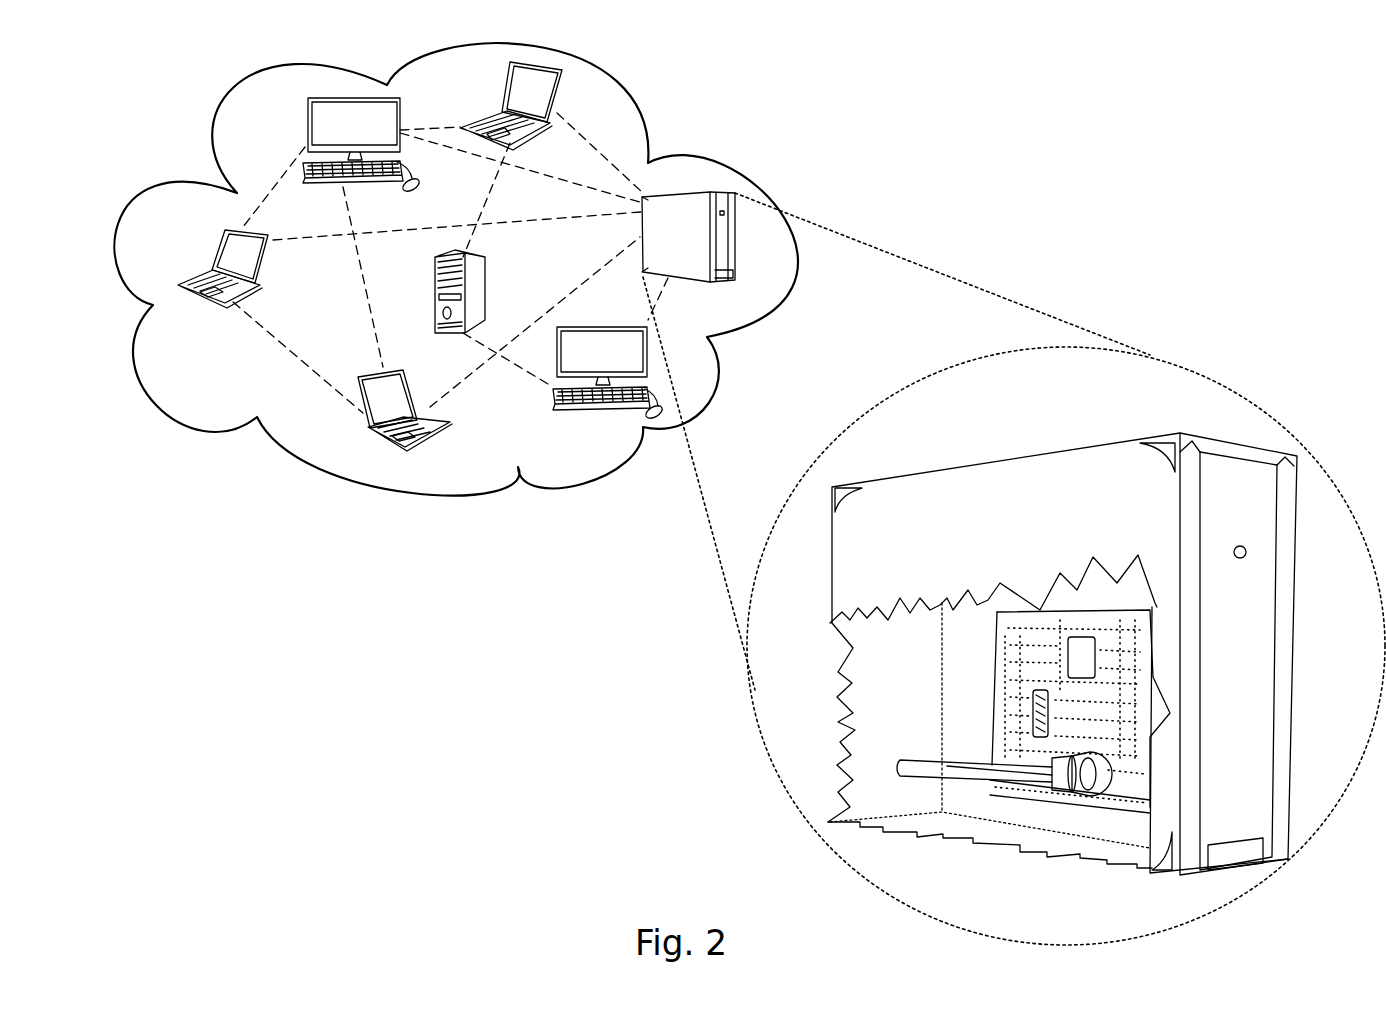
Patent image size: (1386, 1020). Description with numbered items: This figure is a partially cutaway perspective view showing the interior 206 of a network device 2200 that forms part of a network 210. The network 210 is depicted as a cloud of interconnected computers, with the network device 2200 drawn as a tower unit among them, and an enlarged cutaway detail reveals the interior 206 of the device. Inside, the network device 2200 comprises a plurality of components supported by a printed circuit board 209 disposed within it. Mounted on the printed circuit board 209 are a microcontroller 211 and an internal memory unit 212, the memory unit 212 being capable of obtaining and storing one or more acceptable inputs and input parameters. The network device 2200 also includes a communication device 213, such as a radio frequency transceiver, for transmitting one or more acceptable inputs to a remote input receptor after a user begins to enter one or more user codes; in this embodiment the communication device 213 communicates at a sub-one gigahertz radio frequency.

The network 210 is at (663, 127).
The network device 2200 is at (722, 240).
The interior 206 is at (877, 717).
The printed circuit board 209 is at (1008, 634).
The microcontroller 211 is at (1042, 690).
The internal memory unit 212 is at (1082, 643).
The communication device 213 is at (1088, 780).